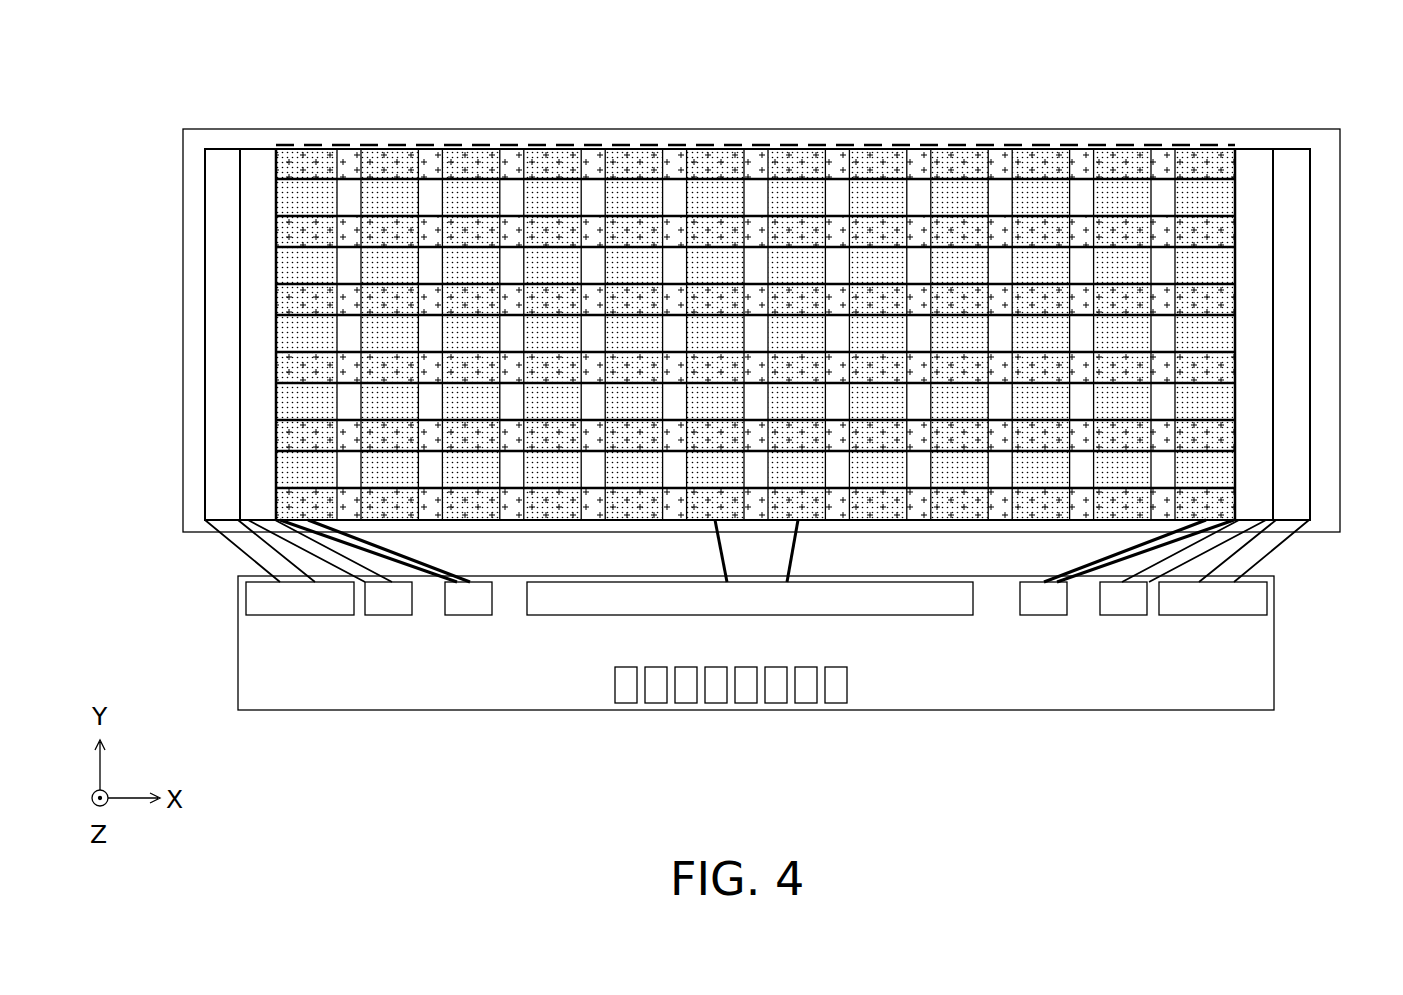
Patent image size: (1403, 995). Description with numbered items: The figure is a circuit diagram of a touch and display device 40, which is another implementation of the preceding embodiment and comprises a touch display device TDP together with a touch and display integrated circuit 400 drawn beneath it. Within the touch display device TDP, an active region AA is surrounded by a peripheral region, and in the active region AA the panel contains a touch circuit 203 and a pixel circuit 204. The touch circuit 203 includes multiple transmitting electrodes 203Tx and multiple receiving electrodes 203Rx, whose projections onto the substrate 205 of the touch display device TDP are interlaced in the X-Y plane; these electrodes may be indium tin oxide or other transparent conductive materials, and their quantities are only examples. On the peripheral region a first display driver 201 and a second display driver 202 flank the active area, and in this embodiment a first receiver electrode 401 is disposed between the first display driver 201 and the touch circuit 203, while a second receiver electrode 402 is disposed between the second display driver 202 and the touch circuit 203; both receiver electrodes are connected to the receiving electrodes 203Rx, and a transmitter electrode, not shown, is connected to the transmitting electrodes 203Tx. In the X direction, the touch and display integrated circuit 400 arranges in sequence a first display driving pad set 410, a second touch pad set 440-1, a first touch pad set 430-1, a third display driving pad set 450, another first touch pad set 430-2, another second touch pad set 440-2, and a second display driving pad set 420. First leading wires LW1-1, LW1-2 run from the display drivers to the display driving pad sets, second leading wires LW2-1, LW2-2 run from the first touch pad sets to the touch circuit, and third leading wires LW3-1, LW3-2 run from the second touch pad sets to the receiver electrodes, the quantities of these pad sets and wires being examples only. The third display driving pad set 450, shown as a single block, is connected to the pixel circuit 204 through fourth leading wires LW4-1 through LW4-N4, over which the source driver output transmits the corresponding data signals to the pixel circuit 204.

The touch and display device 40 is at (721, 412).
The substrate 205 is at (90, 90).
The touch display device TDP is at (182, 142).
The first display driver 201 is at (222, 158).
The second display driver 202 is at (1292, 158).
The first receiver electrode 401 is at (258, 158).
The second receiver electrode 402 is at (1255, 158).
The touch circuit 203 is at (1104, 112).
The transmitting electrodes 203Tx is at (310, 190).
The receiving electrodes 203Rx is at (432, 160).
The pixel circuit 204 is at (1131, 93).
The active region AA is at (1068, 143).
The touch and display integrated circuit 400 is at (712, 686).
The first display driving pad set 410 is at (300, 615).
The second display driving pad set 420 is at (1218, 615).
The first touch pad set 430-1 is at (475, 615).
The first touch pad set 430-2 is at (1045, 615).
The second touch pad set 440-1 is at (400, 615).
The second touch pad set 440-2 is at (1110, 615).
The third display driving pad set 450 is at (585, 615).
The first leading wire LW1-1 is at (255, 549).
The first leading wire LW1-2 is at (1258, 550).
The second leading wire LW2-1 is at (420, 560).
The second leading wire LW2-2 is at (1098, 563).
The third leading wire LW3-1 is at (362, 582).
The third leading wire LW3-2 is at (1153, 572).
The fourth leading wire LW4-1 is at (717, 553).
The fourth leading wire LW4-N4 is at (797, 555).